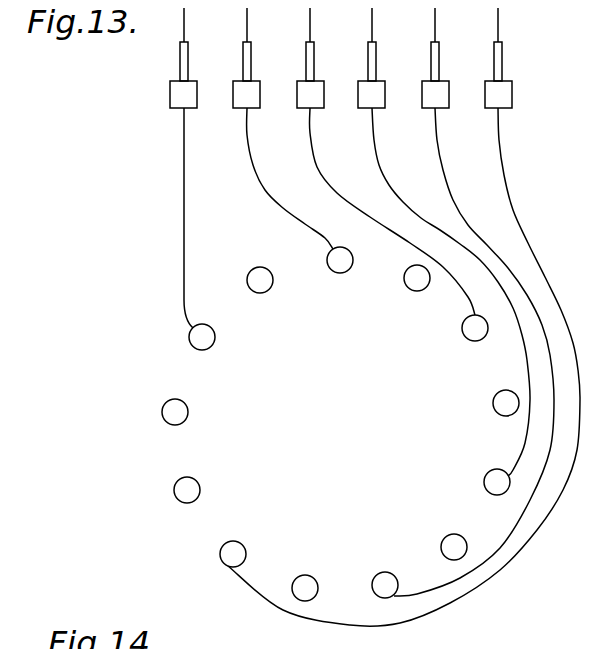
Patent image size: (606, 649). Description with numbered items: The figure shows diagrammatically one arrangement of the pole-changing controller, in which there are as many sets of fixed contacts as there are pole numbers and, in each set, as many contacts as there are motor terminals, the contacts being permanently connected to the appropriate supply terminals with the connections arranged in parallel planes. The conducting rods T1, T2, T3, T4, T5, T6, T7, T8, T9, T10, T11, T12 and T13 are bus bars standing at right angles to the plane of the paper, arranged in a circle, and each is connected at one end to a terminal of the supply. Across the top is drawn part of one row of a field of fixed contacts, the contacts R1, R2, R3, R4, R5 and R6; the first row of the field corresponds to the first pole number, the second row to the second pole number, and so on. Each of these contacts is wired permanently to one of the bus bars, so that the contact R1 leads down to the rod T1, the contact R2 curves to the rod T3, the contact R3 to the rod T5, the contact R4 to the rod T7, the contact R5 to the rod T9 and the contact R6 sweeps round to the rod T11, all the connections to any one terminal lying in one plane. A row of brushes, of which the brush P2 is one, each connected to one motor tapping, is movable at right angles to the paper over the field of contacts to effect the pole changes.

The fixed contact R1 is at (183, 168).
The fixed contact R2 is at (283, 128).
The fixed contact R3 is at (386, 161).
The fixed contact R4 is at (444, 242).
The fixed contact R5 is at (474, 302).
The fixed contact R6 is at (404, 317).
The brush P2 is at (261, 57).
The conducting rod T1 is at (202, 337).
The conducting rod T2 is at (260, 280).
The conducting rod T3 is at (340, 260).
The conducting rod T4 is at (417, 278).
The conducting rod T5 is at (475, 328).
The conducting rod T6 is at (506, 403).
The conducting rod T7 is at (497, 482).
The conducting rod T8 is at (454, 547).
The conducting rod T9 is at (385, 585).
The conducting rod T10 is at (305, 588).
The conducting rod T11 is at (233, 554).
The conducting rod T12 is at (187, 490).
The conducting rod T13 is at (175, 412).